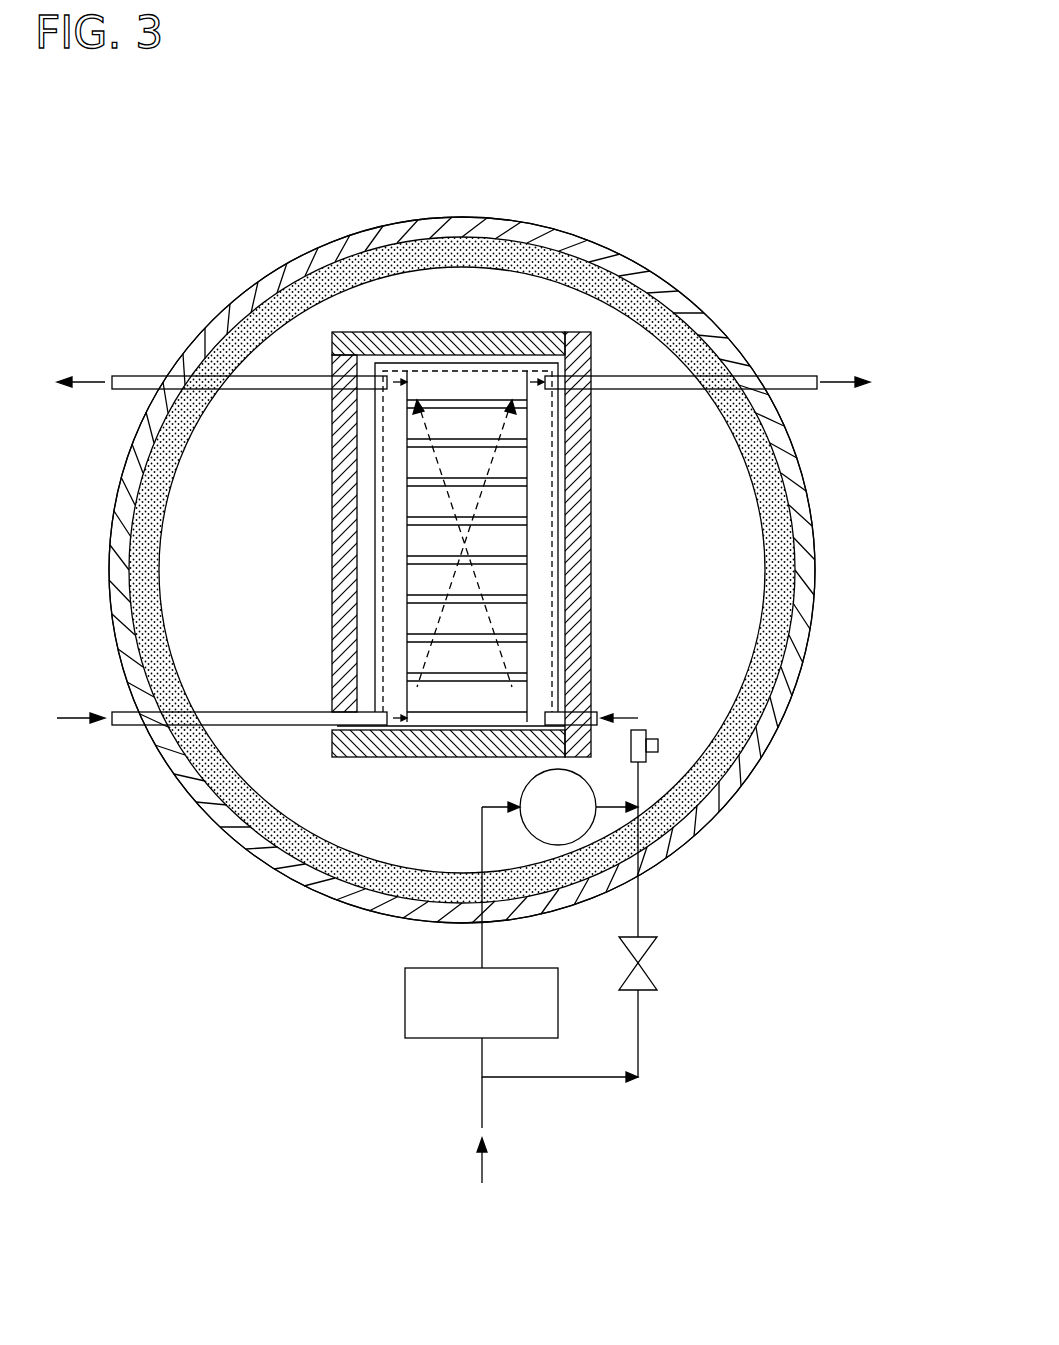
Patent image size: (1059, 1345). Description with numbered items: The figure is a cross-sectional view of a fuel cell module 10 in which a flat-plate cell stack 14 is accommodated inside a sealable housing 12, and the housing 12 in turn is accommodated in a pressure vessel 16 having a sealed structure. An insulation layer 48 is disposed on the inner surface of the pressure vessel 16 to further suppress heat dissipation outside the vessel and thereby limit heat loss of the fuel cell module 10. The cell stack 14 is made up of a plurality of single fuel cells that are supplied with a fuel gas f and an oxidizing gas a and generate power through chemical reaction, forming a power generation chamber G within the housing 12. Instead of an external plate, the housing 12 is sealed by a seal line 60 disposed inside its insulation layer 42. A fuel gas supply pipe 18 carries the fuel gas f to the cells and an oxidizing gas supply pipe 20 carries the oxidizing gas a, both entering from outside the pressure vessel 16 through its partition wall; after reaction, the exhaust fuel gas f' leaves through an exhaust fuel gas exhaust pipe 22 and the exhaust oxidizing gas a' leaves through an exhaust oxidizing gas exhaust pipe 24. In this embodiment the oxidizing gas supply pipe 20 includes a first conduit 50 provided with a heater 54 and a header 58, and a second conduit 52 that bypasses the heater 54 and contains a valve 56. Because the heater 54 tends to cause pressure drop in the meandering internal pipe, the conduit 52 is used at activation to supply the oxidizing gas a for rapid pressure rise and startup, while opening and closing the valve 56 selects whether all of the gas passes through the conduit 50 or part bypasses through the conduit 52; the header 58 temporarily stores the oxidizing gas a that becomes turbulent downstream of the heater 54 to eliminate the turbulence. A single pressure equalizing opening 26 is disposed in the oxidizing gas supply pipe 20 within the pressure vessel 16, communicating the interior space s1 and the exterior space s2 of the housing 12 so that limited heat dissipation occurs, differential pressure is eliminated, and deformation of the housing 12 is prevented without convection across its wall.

The fuel cell module 10 is at (512, 118).
The pressure vessel 16 is at (660, 272).
The insulation layer 48 is at (790, 530).
The housing 12 is at (322, 510).
The insulation layer 42 is at (342, 617).
The seal line 60 is at (555, 533).
The cell stack 14 is at (483, 380).
The power generation chamber G is at (410, 557).
The interior space s1 is at (456, 405).
The exterior space s2 is at (718, 592).
The exhaust oxidizing gas exhaust pipe 24 is at (248, 398).
The exhaust fuel gas exhaust pipe 22 is at (655, 395).
The fuel gas supply pipe 18 is at (215, 712).
The pressure equalizing opening 26 is at (660, 745).
The oxidizing gas supply pipe 20 is at (653, 910).
The header 58 is at (522, 790).
The conduit 50 is at (482, 940).
The heater 54 is at (405, 1015).
The valve 56 is at (655, 947).
The conduit 52 is at (640, 1025).
The oxidizing gas a is at (506, 1130).
The exhaust oxidizing gas a' is at (81, 351).
The fuel gas f is at (81, 690).
The exhaust fuel gas f' is at (845, 350).